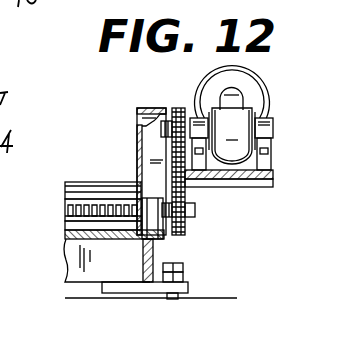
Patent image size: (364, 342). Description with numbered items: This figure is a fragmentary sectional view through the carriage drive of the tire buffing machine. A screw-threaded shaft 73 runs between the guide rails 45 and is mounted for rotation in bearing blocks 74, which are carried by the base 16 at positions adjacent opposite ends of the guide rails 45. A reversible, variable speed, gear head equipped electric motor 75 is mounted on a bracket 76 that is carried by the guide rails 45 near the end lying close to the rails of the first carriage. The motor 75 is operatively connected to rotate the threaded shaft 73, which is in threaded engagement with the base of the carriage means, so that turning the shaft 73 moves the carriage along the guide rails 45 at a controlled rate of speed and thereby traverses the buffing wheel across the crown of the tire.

The base 16 is at (63, 277).
The guide rails 45 is at (85, 182).
The screw-threaded shaft 73 is at (65, 212).
The bearing blocks 74 is at (156, 223).
The electric motor 75 is at (296, 81).
The bracket 76 is at (262, 211).